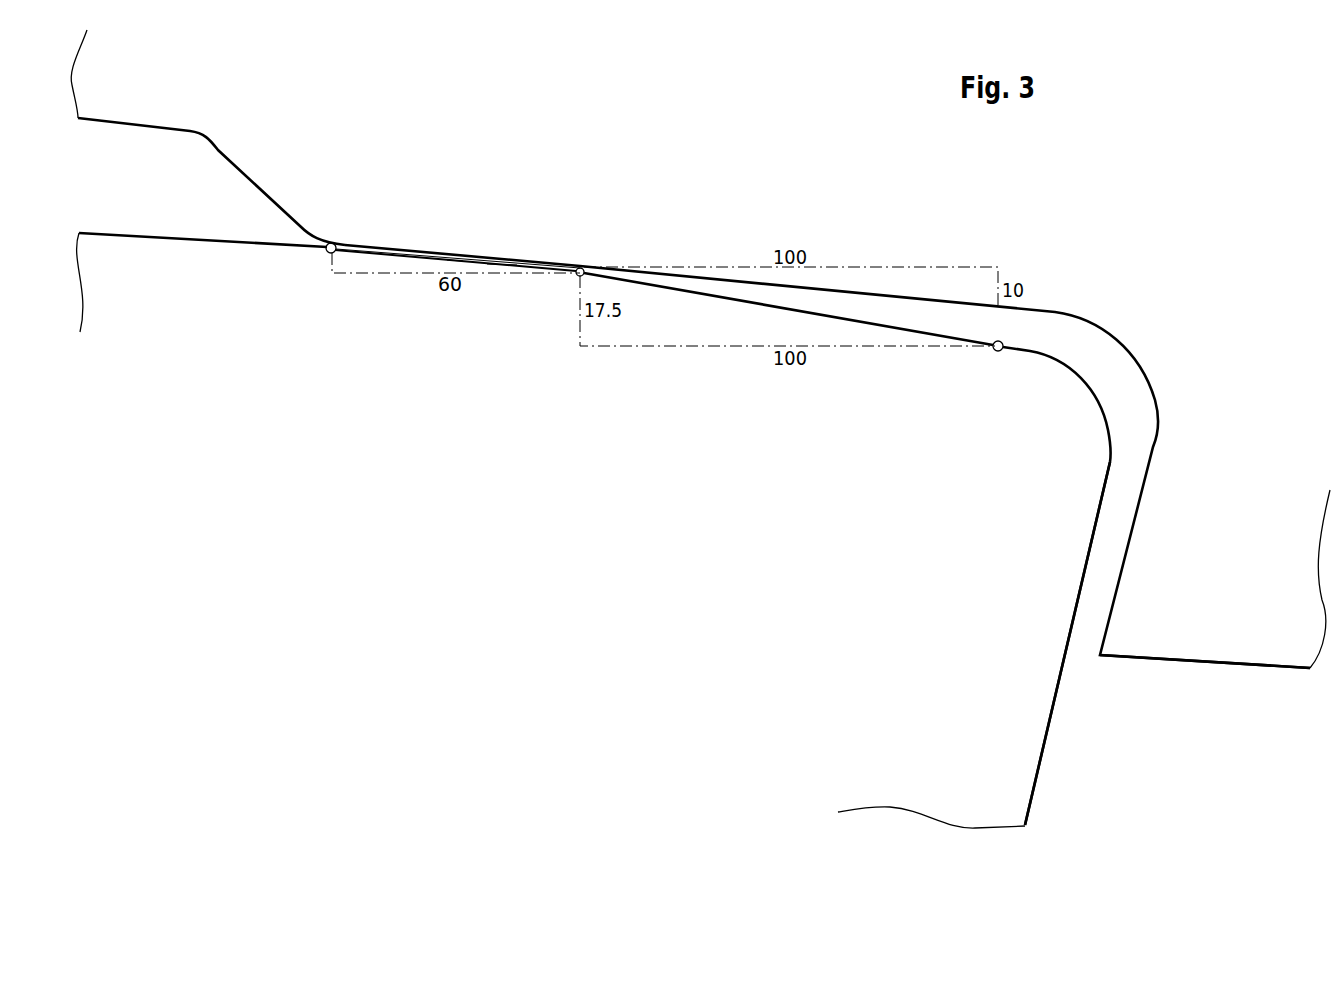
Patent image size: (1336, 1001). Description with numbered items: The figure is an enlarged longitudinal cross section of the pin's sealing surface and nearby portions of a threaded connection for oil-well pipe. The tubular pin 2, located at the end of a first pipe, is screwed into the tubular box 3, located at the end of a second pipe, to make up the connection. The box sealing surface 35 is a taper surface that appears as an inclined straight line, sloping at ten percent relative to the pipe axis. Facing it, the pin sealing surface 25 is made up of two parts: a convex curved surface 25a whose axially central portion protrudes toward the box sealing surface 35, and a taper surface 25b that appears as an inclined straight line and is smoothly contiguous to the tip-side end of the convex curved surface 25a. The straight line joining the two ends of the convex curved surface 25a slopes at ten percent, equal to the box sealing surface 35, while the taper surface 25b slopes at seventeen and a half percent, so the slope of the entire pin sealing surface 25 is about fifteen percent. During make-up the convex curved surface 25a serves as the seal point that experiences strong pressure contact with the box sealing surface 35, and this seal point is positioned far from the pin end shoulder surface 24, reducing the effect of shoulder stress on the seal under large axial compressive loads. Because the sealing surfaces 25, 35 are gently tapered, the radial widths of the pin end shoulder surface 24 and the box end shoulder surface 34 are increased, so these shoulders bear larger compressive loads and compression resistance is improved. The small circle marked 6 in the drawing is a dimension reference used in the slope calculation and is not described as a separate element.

The pin 2 is at (814, 585).
The box 3 is at (1190, 247).
The pivot point 6 is at (324, 259).
The pin end shoulder surface 24 is at (1055, 703).
The pin sealing surface 25 is at (669, 375).
The convex curved surface 25a is at (530, 279).
The taper surface 25b is at (728, 300).
The box end shoulder surface 34 is at (1122, 559).
The box sealing surface 35 is at (423, 250).